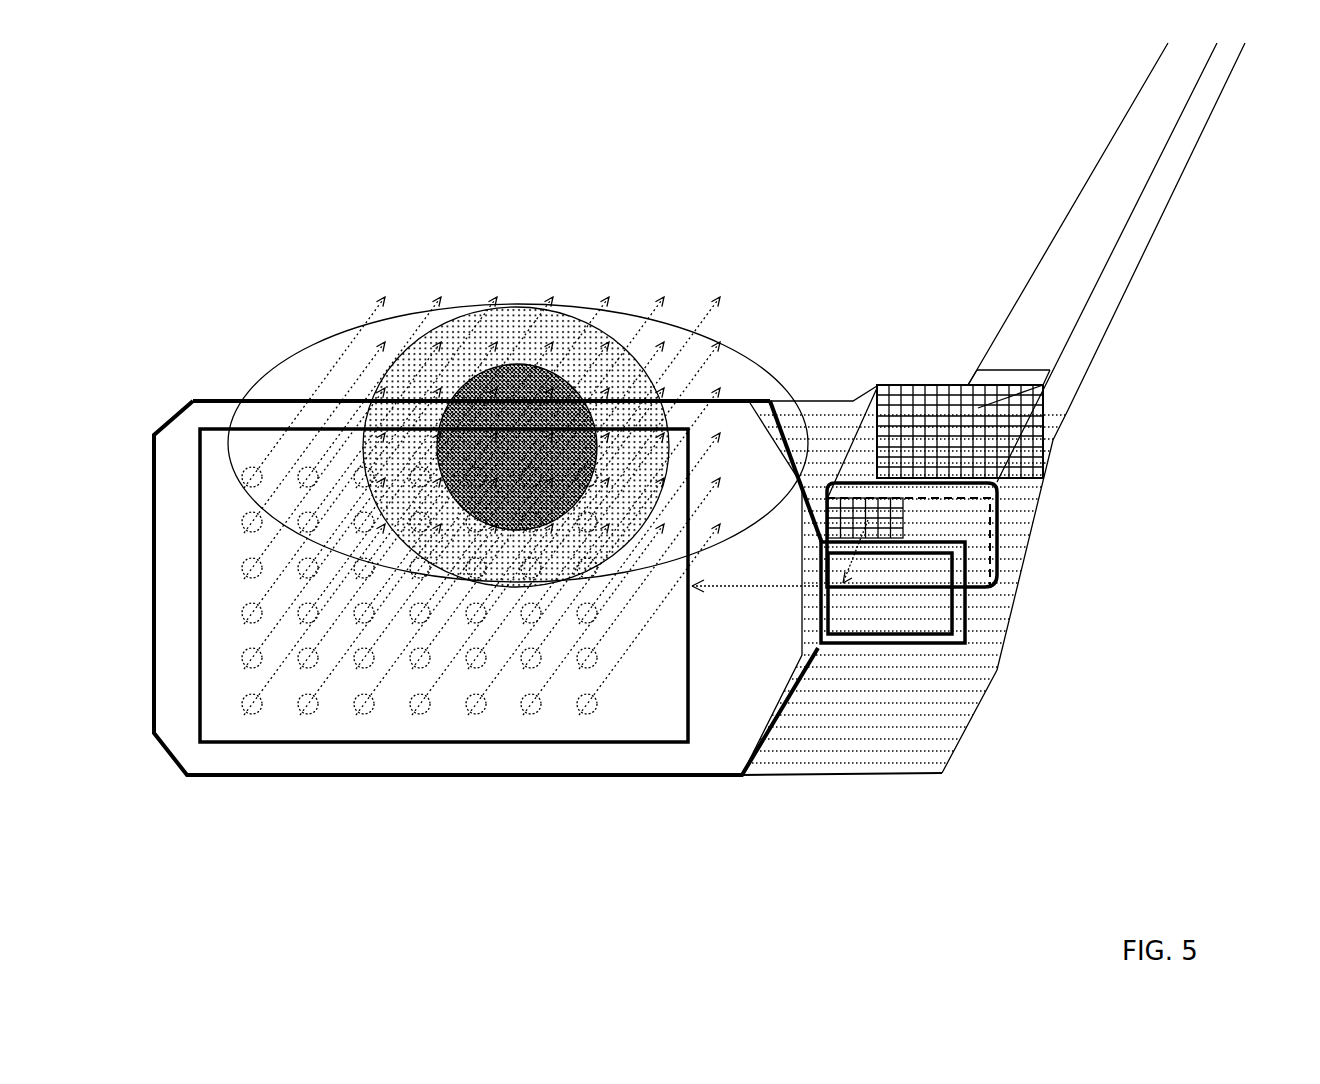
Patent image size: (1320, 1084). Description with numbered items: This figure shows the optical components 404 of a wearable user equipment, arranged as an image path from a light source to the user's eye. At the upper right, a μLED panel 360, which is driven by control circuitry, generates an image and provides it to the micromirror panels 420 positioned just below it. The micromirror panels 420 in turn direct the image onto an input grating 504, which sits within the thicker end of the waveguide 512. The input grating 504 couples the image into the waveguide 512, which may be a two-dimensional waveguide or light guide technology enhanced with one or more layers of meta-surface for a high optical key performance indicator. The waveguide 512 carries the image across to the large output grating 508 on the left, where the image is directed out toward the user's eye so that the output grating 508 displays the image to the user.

The optical components 404 is at (290, 108).
The μLED panel 360 is at (1073, 403).
The micromirror panels 420 is at (1002, 486).
The input grating 504 is at (957, 617).
The output grating 508 is at (628, 742).
The waveguide 512 is at (402, 777).